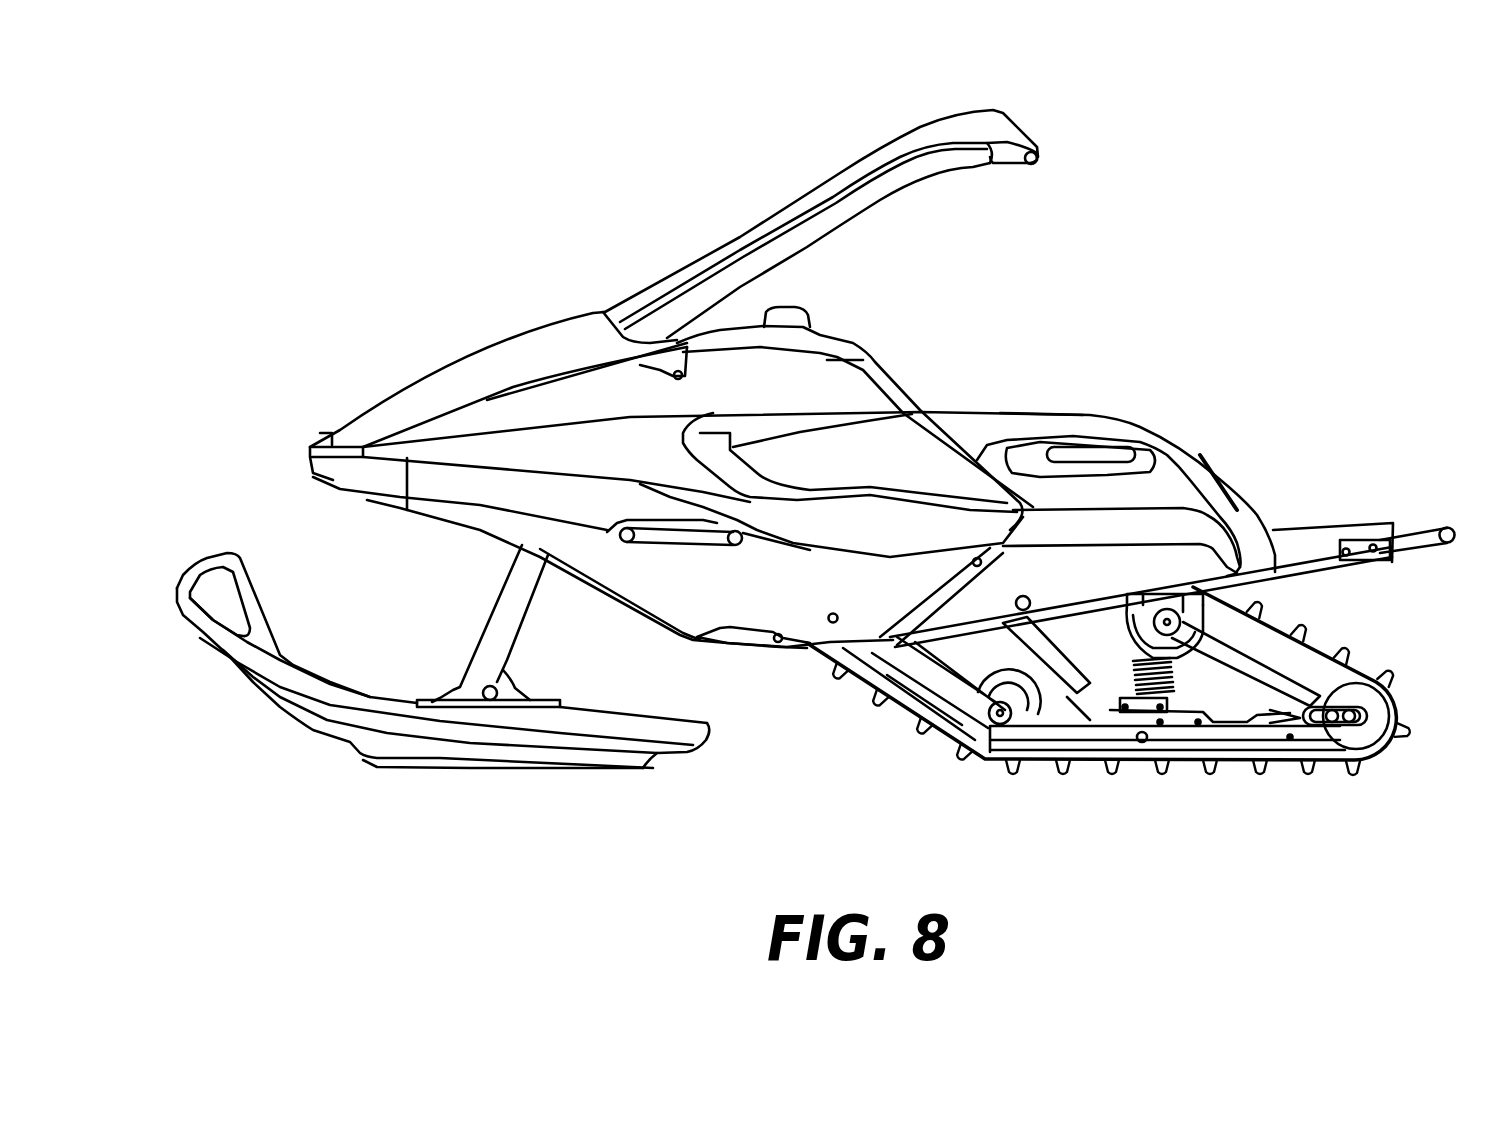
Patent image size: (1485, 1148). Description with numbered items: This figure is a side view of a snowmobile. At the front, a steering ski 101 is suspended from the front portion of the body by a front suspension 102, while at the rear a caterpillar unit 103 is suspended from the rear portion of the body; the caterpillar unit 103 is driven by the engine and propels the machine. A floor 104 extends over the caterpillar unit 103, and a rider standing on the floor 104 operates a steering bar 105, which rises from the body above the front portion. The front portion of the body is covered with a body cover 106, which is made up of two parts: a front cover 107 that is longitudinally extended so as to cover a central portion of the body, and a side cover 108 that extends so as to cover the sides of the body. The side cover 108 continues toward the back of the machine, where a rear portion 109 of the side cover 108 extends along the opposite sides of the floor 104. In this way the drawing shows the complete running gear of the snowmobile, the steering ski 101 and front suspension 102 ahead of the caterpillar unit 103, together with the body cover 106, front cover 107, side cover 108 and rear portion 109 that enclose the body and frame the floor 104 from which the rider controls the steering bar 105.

The steering ski 101 is at (317, 727).
The front suspension 102 is at (480, 630).
The caterpillar unit 103 is at (1355, 672).
The floor 104 is at (1310, 533).
The steering bar 105 is at (1017, 163).
The body cover 106 is at (412, 383).
The front cover 107 is at (547, 350).
The side cover 108 is at (577, 437).
The rear portion 109 is at (1197, 455).